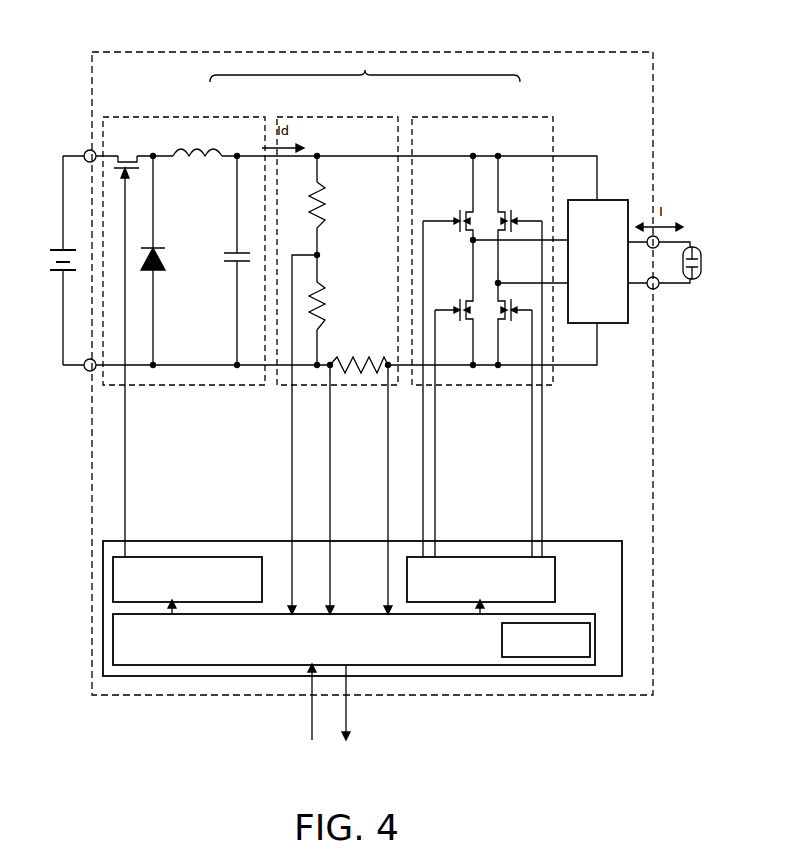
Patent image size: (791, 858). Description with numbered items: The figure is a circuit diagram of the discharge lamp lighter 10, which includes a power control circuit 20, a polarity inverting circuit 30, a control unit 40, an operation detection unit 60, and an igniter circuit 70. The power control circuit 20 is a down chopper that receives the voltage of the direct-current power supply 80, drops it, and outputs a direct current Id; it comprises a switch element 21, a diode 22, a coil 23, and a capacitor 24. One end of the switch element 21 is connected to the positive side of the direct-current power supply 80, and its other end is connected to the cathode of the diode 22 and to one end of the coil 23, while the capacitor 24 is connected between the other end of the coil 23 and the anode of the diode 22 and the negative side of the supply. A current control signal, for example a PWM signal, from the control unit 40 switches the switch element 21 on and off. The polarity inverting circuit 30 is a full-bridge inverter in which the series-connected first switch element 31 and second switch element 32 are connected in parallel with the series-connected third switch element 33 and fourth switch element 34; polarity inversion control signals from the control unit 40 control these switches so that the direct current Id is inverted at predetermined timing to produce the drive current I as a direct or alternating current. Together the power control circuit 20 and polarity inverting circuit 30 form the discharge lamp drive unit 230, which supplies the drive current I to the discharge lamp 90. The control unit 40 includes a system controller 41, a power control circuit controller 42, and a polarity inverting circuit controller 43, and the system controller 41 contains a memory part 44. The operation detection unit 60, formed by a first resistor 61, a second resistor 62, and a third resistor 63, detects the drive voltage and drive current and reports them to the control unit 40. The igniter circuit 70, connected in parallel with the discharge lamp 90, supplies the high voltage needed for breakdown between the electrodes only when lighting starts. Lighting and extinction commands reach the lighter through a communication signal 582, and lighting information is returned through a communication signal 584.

The discharge lamp lighter 10 is at (538, 52).
The power control circuit 20 is at (215, 117).
The switch element 21 is at (125, 152).
The diode 22 is at (161, 261).
The coil 23 is at (201, 145).
The capacitor 24 is at (243, 261).
The polarity inverting circuit 30 is at (490, 117).
The first switch element 31 is at (446, 375).
The second switch element 32 is at (452, 420).
The third switch element 33 is at (521, 375).
The fourth switch element 34 is at (516, 420).
The control unit 40 is at (448, 541).
The system controller 41 is at (576, 614).
The power control circuit controller 42 is at (206, 557).
The polarity inverting circuit controller 43 is at (552, 557).
The memory part 44 is at (590, 627).
The operation detection unit 60 is at (358, 380).
The first resistor 61 is at (332, 205).
The second resistor 62 is at (332, 310).
The third resistor 63 is at (359, 349).
The igniter circuit 70 is at (620, 200).
The direct-current power supply 80 is at (60, 250).
The discharge lamp 90 is at (692, 247).
The discharge lamp drive unit 230 is at (365, 67).
The communication signal 582 is at (312, 718).
The communication signal 584 is at (346, 718).